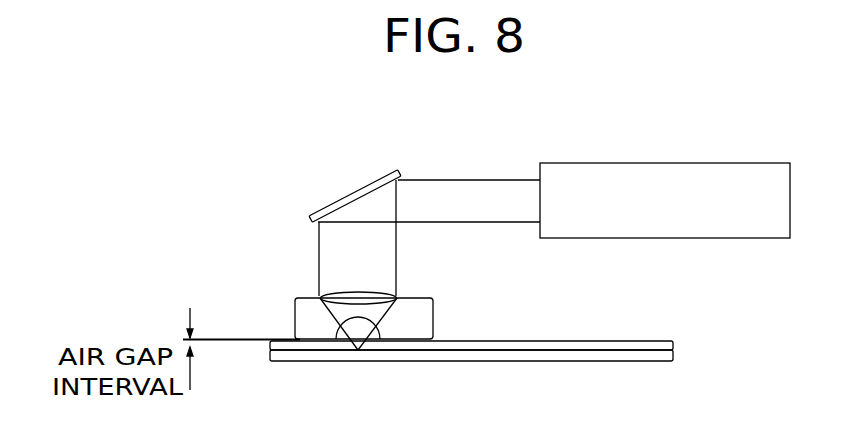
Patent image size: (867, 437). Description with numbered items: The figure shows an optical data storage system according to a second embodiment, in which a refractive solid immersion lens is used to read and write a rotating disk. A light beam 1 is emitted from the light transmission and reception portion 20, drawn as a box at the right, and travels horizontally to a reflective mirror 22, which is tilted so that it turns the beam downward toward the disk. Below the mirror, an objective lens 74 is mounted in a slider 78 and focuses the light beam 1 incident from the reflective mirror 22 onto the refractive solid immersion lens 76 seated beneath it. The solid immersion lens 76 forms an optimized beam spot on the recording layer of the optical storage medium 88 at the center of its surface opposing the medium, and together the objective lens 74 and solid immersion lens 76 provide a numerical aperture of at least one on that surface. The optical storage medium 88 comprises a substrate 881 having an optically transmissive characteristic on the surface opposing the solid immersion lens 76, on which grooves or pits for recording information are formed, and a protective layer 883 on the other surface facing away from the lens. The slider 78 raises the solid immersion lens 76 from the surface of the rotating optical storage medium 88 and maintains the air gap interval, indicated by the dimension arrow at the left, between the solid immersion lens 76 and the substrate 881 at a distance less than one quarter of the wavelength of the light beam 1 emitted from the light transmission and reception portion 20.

The light beam 1 is at (480, 180).
The light transmission and reception portion 20 is at (603, 163).
The reflective mirror 22 is at (351, 192).
The objective lens 74 is at (391, 298).
The refractive solid immersion lens 76 is at (378, 333).
The slider 78 is at (297, 298).
The optical storage medium 88 is at (515, 339).
The substrate 881 is at (622, 341).
The protective layer 883 is at (668, 357).